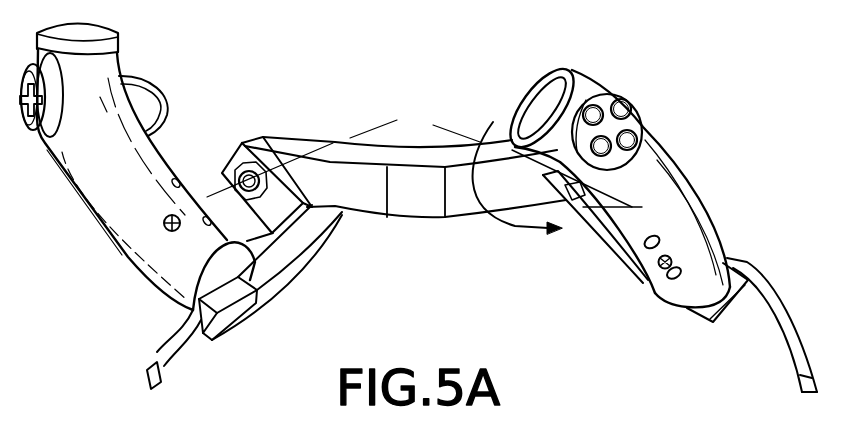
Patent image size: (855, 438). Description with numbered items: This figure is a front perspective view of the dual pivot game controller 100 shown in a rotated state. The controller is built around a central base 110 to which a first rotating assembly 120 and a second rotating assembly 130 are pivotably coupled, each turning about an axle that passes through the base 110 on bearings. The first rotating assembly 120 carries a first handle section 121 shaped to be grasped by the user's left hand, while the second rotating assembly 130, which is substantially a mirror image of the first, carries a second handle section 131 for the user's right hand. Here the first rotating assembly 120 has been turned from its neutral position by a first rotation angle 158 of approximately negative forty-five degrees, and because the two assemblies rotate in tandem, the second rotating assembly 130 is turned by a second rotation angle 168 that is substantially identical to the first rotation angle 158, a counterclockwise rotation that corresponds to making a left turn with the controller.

The dual pivot game controller 100 is at (418, 204).
The base 110 is at (400, 200).
The first rotating assembly 120 is at (181, 207).
The first handle section 121 is at (193, 178).
The second rotating assembly 130 is at (658, 225).
The second handle section 131 is at (703, 178).
The first rotation angle 158 is at (333, 137).
The second rotation angle 168 is at (513, 225).